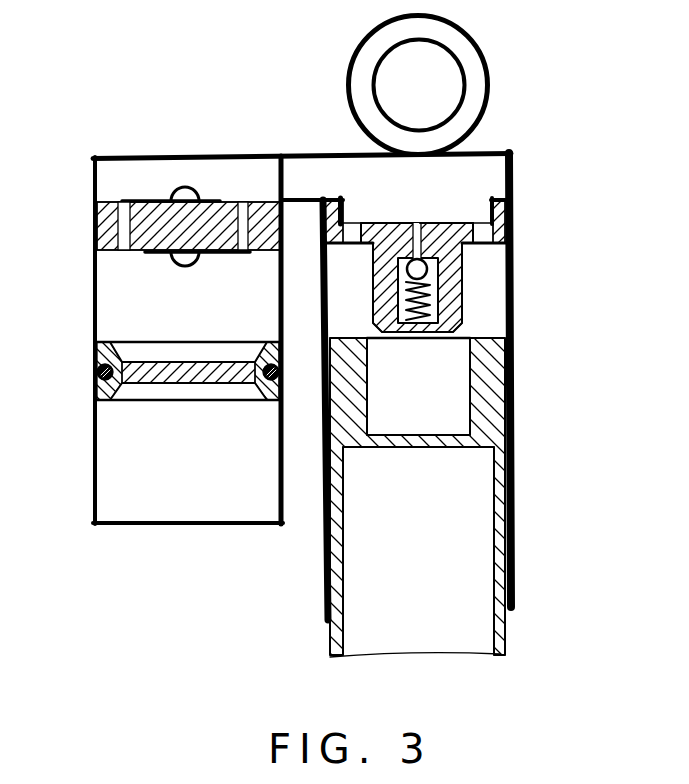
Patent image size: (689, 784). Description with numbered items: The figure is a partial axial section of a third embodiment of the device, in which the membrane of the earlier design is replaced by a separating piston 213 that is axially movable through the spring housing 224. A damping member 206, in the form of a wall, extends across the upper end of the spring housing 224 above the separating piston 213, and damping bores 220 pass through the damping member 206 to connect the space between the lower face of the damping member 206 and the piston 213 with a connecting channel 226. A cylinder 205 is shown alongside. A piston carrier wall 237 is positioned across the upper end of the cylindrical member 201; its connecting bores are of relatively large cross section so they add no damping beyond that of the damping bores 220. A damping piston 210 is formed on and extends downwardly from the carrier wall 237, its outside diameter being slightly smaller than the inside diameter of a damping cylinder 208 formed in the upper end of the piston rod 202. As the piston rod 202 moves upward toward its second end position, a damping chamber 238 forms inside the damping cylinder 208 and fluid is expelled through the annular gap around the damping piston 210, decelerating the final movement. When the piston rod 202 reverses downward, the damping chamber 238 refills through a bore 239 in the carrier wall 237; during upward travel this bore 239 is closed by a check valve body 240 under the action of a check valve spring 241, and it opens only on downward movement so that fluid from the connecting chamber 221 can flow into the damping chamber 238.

The cylindrical member 201 is at (514, 299).
The piston rod 202 is at (502, 615).
The cylinder 205 is at (110, 495).
The damping member 206 is at (96, 233).
The damping cylinder 208 is at (470, 385).
The damping piston 210 is at (453, 283).
The separating piston 213 is at (135, 373).
The damping bores 220 is at (126, 200).
The connecting chamber 221 is at (497, 165).
The spring housing 224 is at (92, 312).
The connecting channel 226 is at (248, 170).
The piston carrier wall 237 is at (445, 235).
The damping chamber 238 is at (350, 226).
The bore 239 is at (421, 222).
The check valve body 240 is at (426, 270).
The check valve spring 241 is at (437, 312).